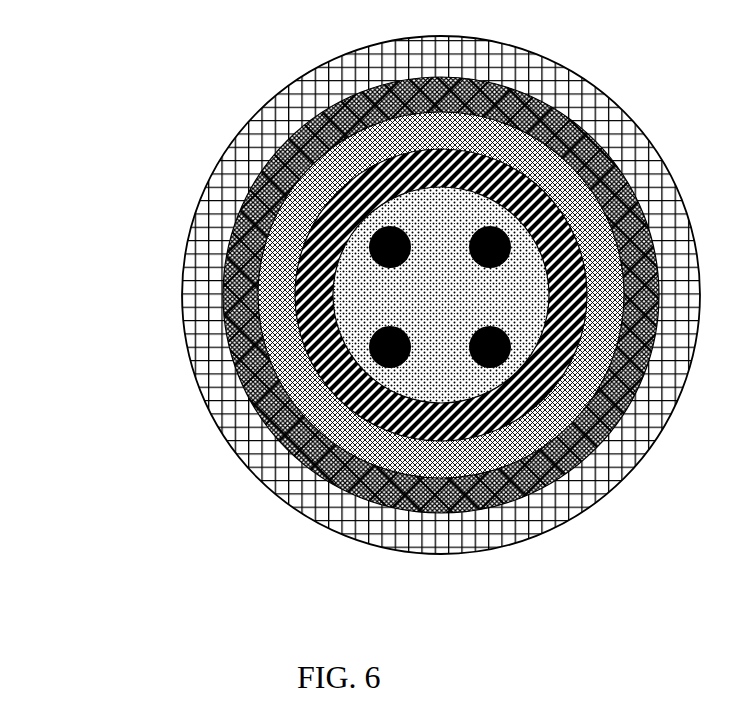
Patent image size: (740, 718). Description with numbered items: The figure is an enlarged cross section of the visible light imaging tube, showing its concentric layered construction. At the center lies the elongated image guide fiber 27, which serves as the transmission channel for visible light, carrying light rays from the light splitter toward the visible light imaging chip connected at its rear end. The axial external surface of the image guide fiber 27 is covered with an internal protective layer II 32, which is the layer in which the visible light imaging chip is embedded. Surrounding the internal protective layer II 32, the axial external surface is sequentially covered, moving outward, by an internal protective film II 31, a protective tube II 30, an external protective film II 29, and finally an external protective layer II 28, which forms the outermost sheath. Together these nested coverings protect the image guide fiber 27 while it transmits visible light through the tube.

The image guide fiber 27 is at (242, 128).
The internal protective layer II 32 is at (220, 152).
The internal protective film II 31 is at (212, 210).
The protective tube II 30 is at (190, 243).
The external protective film II 29 is at (180, 290).
The external protective layer II 28 is at (185, 350).